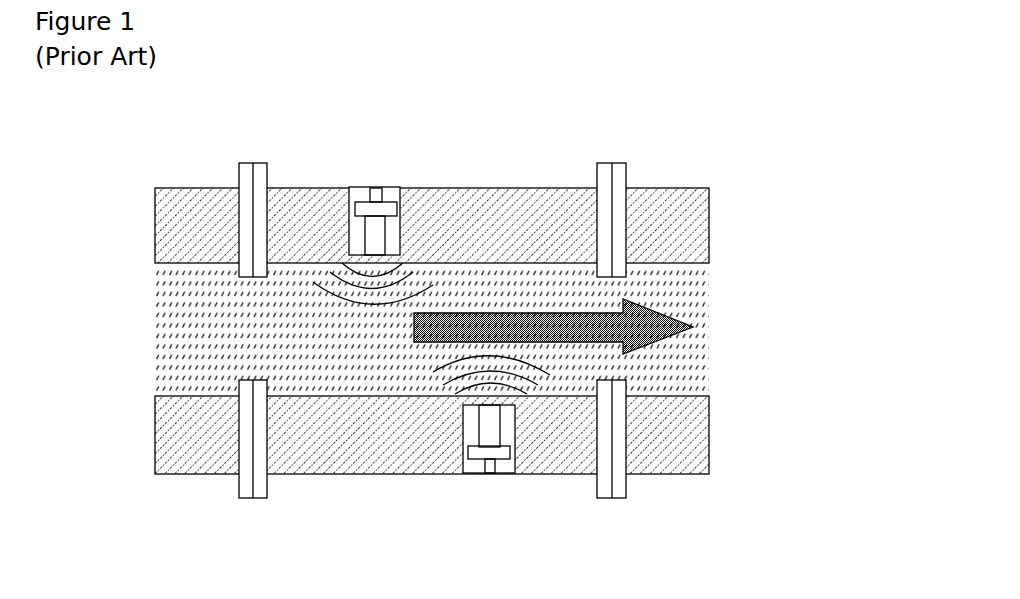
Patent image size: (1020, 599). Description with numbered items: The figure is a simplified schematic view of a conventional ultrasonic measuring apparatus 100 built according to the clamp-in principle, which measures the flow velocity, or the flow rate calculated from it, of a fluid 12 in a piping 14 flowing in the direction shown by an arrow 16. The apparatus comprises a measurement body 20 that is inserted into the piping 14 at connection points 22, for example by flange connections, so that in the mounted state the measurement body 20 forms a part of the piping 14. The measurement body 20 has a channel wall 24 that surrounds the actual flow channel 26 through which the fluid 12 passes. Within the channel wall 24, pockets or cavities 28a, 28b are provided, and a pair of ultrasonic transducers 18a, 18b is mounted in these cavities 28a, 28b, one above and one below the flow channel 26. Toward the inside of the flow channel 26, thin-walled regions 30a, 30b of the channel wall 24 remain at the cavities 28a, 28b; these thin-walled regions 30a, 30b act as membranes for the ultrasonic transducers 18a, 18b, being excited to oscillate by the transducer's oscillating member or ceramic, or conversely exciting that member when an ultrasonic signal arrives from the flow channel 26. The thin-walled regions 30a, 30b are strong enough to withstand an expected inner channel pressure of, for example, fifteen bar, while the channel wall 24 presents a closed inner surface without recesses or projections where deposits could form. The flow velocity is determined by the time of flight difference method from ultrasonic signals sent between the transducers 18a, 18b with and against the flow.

The ultrasonic measuring apparatus 100 is at (743, 127).
The fluid 12 is at (200, 347).
The piping 14 is at (177, 423).
The arrow 16 is at (648, 332).
The ultrasonic transducer 18a is at (385, 205).
The ultrasonic transducer 18b is at (497, 452).
The measurement body 20 is at (155, 188).
The connection points 22 is at (238, 180).
The channel wall 24 is at (301, 457).
The flow channel 26 is at (363, 372).
The cavity 28a is at (357, 237).
The cavity 28b is at (472, 418).
The thin-walled region 30a is at (388, 257).
The thin-walled region 30b is at (507, 400).